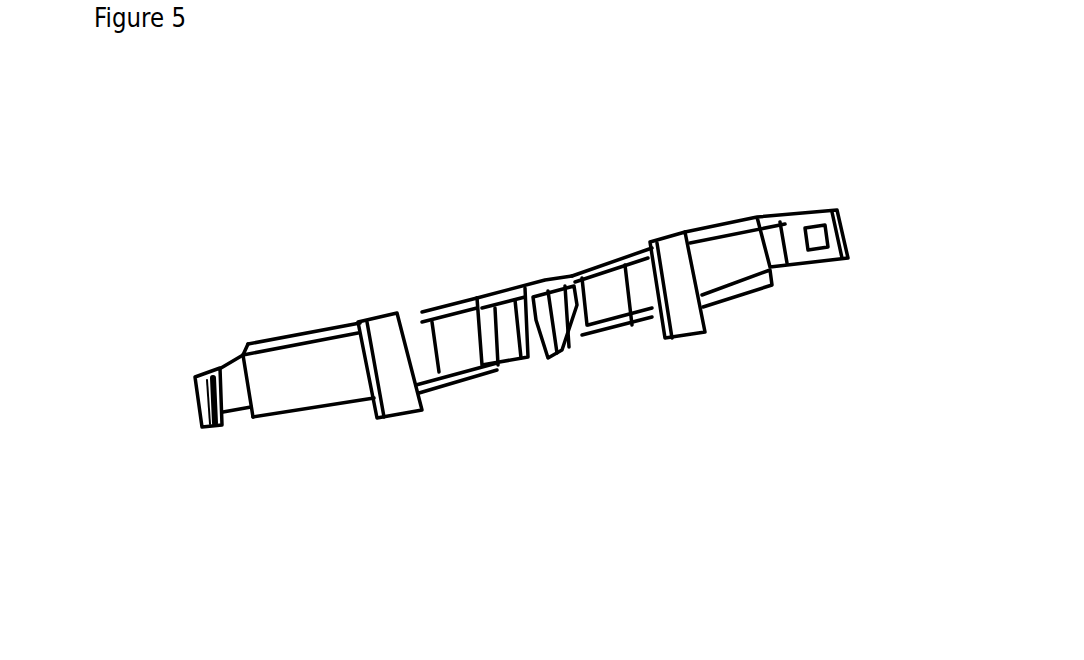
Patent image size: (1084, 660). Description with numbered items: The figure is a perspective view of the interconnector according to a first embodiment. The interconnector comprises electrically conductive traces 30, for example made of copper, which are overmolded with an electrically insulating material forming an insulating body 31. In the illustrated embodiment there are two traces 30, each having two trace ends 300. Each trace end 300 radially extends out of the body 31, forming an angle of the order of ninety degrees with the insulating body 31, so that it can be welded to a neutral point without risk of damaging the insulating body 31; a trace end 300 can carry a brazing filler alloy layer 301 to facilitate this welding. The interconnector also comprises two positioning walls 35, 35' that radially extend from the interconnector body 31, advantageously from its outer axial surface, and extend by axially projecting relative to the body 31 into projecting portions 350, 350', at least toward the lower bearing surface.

The trace 30 is at (233, 356).
The insulating body 31 is at (318, 382).
The positioning wall 35 is at (528, 382).
The positioning wall 35' is at (676, 371).
The trace end 300 is at (197, 413).
The brazing filler alloy layer 301 is at (812, 210).
The projecting portion 350 is at (485, 317).
The projecting portion 350' is at (798, 293).